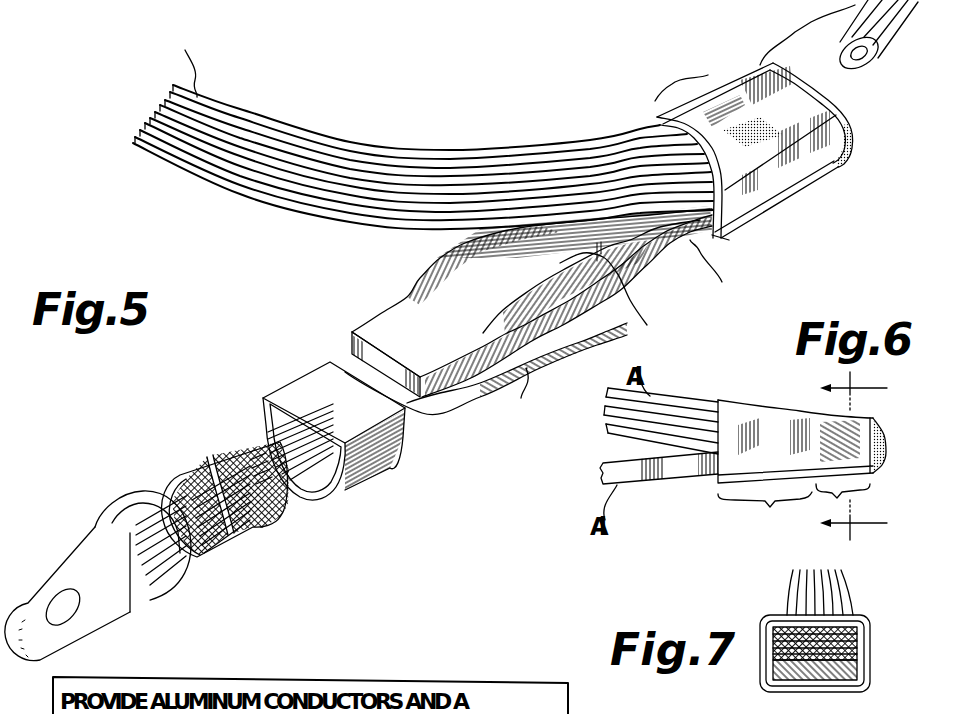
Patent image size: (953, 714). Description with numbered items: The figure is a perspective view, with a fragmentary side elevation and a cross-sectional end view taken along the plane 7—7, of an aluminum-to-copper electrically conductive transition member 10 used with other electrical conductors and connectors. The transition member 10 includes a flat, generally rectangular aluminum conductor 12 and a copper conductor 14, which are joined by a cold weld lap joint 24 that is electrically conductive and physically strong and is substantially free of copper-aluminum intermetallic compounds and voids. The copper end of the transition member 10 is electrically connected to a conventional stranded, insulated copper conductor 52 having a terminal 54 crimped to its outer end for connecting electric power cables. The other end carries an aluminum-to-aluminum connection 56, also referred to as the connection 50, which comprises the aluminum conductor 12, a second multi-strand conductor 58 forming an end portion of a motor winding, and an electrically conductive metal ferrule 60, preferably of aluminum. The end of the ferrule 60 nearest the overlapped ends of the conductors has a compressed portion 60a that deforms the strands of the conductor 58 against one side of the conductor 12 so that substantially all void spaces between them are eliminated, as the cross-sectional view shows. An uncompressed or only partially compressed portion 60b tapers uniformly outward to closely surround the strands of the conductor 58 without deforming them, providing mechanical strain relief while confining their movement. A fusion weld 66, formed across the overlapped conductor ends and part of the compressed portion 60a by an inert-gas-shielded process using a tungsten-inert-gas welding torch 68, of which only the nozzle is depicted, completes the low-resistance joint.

In FIG. 5, the aluminum-to-copper electrically conductive transition member 10 is at (595, 404).
In FIG. 5, the aluminum conductor 12 is at (384, 326).
In FIG. 6, the aluminum conductor 12 is at (660, 477).
In FIG. 7, the aluminum conductor 12 is at (840, 670).
In FIG. 5, the copper conductor 14 is at (416, 405).
In FIG. 5, the cold weld lap joint 24 is at (647, 325).
In FIG. 5, the connection 50 is at (178, 353).
In FIG. 5, the stranded, insulated copper conductor 52 is at (182, 463).
In FIG. 5, the terminal 54 is at (82, 552).
In FIG. 5, the aluminum-to-aluminum connection 56 is at (808, 187).
In FIG. 5, the multi-strand conductor 58 is at (195, 178).
In FIG. 6, the multi-strand conductor 58 is at (690, 396).
In FIG. 7, the multi-strand conductor 58 is at (855, 620).
In FIG. 5, the ferrule 60 is at (753, 219).
In FIG. 6, the ferrule 60 is at (778, 408).
In FIG. 7, the ferrule 60 is at (868, 640).
In FIG. 5, the compressed portion 60a is at (747, 60).
In FIG. 6, the compressed portion 60a is at (837, 498).
In FIG. 5, the uncompressed portion 60b is at (707, 77).
In FIG. 6, the uncompressed portion 60b is at (770, 507).
In FIG. 5, the fusion weld 66 is at (851, 134).
In FIG. 6, the fusion weld 66 is at (885, 460).
In FIG. 5, the tungsten-inert-gas welding torch 68 is at (891, 44).
In FIG. 6, the section plane 7— 7 is at (866, 458).